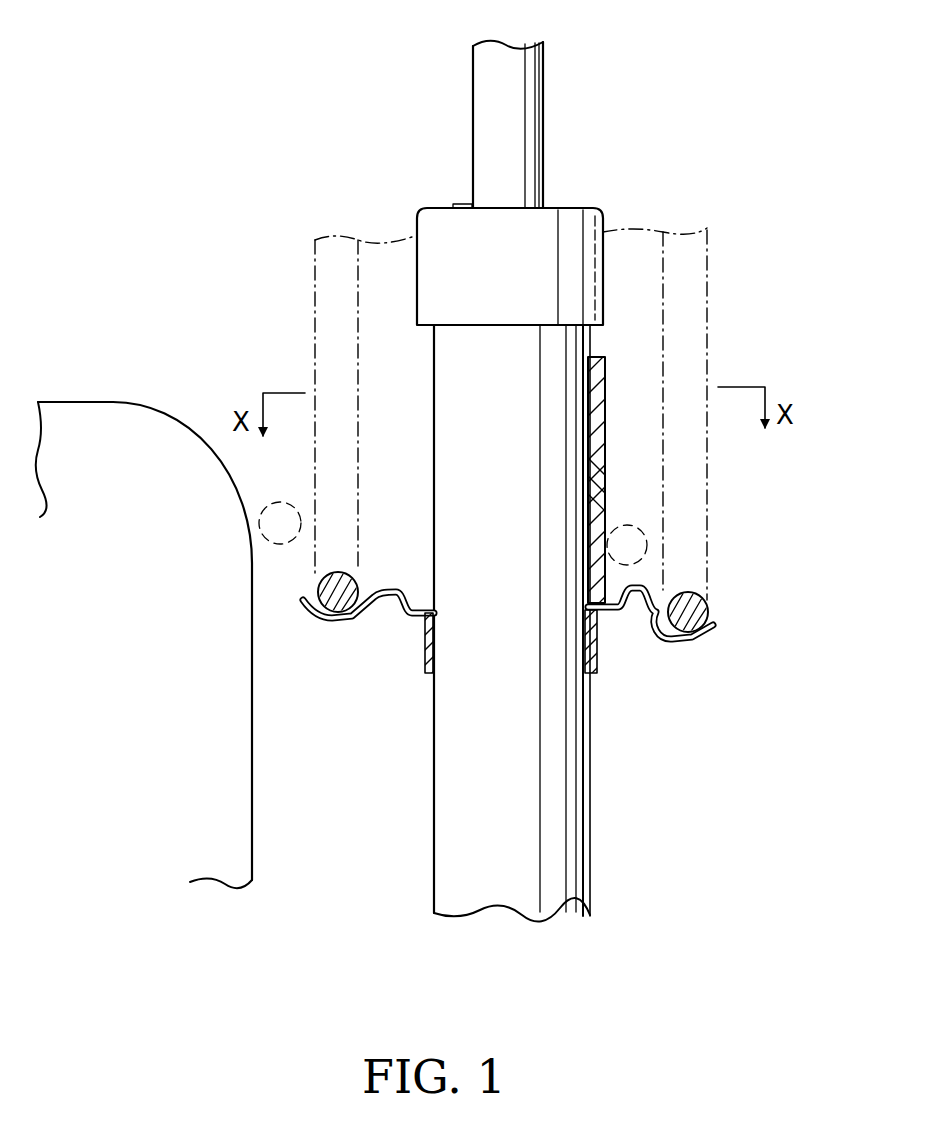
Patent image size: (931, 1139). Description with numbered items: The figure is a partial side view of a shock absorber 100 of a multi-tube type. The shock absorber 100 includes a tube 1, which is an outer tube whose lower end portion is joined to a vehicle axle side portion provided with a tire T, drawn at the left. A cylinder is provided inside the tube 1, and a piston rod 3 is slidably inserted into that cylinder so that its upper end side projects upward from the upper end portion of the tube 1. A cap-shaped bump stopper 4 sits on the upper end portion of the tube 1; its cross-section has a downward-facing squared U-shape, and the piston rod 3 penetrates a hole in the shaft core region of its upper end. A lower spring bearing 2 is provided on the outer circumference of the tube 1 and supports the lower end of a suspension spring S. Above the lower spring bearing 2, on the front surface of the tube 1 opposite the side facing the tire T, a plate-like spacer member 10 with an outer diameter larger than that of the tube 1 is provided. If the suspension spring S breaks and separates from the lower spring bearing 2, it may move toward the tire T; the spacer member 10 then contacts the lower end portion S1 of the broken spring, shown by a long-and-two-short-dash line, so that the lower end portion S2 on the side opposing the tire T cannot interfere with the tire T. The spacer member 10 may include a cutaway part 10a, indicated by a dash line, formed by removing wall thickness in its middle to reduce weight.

The shock absorber 100 is at (598, 99).
The tube 1 is at (435, 828).
The lower spring bearing 2 is at (399, 616).
The piston rod 3 is at (472, 113).
The bump stopper 4 is at (437, 209).
The spacer member 10 is at (615, 379).
The cutaway part 10a is at (607, 482).
The suspension spring S is at (712, 608).
The lower end portion of the broken suspension spring S1 is at (648, 538).
The lower end portion of the broken suspension spring at a side opposing the tire S2 is at (268, 544).
The tire T is at (85, 402).